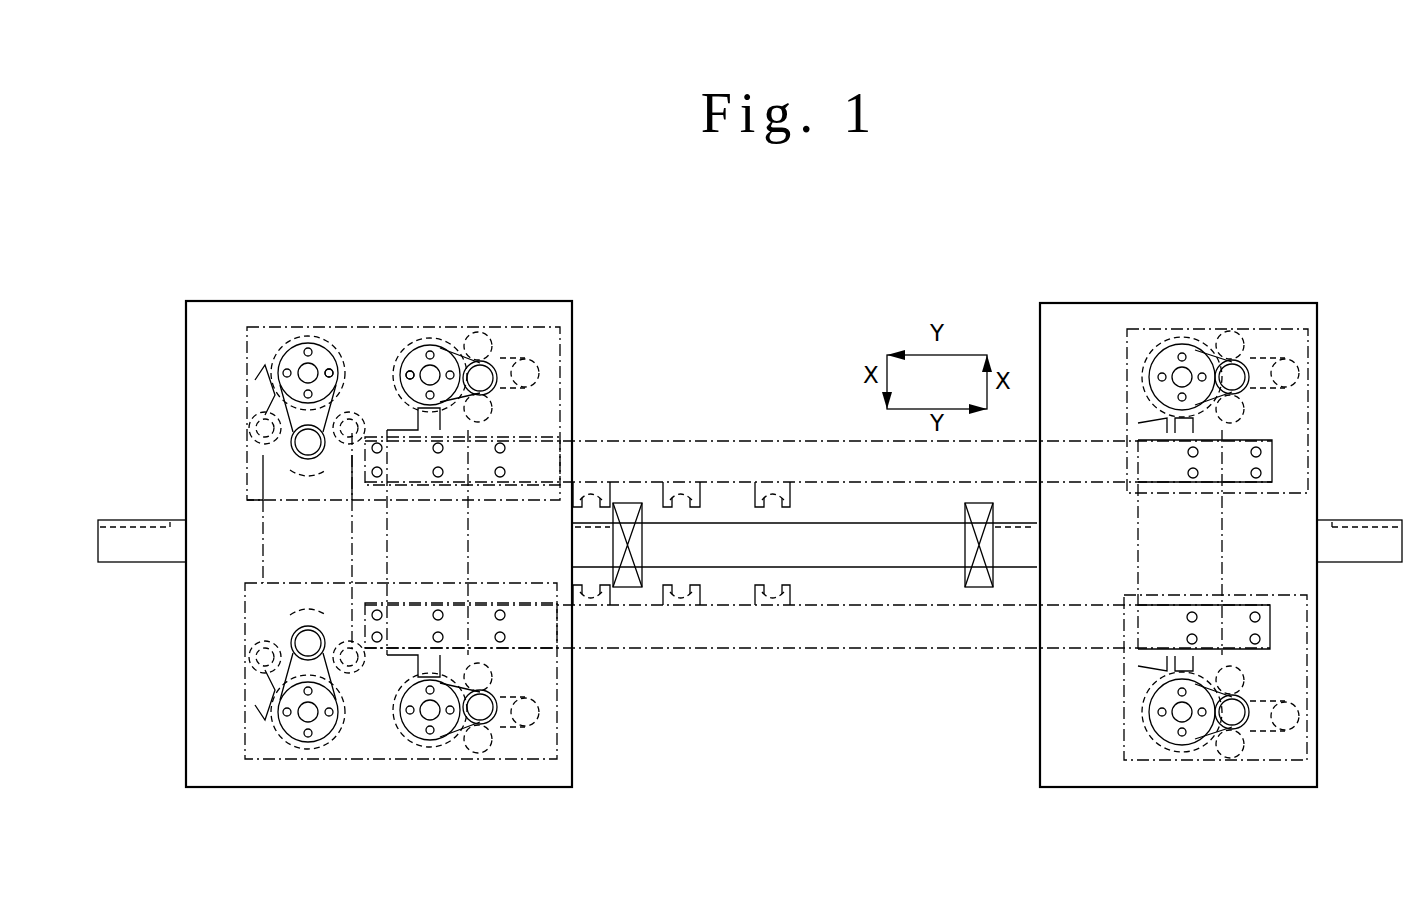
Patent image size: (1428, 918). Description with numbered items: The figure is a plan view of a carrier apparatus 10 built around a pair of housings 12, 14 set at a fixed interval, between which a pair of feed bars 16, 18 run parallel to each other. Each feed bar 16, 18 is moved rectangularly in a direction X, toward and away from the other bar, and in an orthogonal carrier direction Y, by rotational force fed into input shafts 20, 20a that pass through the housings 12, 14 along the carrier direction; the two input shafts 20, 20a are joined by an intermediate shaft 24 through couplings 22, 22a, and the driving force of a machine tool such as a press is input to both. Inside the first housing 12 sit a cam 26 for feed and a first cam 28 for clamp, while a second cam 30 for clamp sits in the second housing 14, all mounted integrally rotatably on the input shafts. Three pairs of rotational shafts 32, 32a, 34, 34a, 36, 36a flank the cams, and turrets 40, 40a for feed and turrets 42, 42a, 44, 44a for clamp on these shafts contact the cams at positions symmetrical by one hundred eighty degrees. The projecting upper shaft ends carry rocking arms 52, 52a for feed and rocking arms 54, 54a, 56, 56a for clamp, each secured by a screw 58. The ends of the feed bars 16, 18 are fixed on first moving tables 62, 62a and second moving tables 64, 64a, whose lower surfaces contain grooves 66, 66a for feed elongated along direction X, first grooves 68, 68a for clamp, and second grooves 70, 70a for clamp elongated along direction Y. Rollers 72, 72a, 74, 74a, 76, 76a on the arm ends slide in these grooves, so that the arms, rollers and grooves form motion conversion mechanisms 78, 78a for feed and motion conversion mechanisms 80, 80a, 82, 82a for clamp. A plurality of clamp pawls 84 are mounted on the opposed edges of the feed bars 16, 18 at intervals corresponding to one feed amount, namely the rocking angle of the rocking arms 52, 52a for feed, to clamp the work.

The carrier apparatus 10 is at (672, 322).
The first housing 12 is at (510, 787).
The second housing 14 is at (1042, 787).
The feed bar 16 is at (800, 441).
The feed bar 18 is at (778, 648).
The input shaft 20 is at (115, 562).
The input shaft 20a is at (1390, 562).
The coupling 22 is at (633, 587).
The coupling 22a is at (978, 587).
The intermediate shaft 24 is at (905, 567).
The cam for feed 26 is at (263, 495).
The first cam for clamp 28 is at (470, 535).
The second cam for clamp 30 is at (1138, 543).
The rotational shaft 32 is at (328, 360).
The rotational shaft 32a is at (318, 722).
The rotational shaft 34 is at (429, 345).
The rotational shaft 34a is at (432, 722).
The rotational shaft 36 is at (1186, 345).
The rotational shaft 36a is at (1176, 740).
The turret for feed 40 is at (287, 343).
The turret for feed 40a is at (270, 742).
The turret for clamp 42 is at (465, 332).
The turret for clamp 42a is at (420, 752).
The turret for clamp 44 is at (1160, 340).
The turret for clamp 44a is at (1140, 748).
The rocking arm for feed 52 is at (303, 343).
The rocking arm for feed 52a is at (298, 745).
The rocking arm for clamp 54 is at (397, 345).
The rocking arm for clamp 54a is at (396, 740).
The rocking arm for clamp 56 is at (1150, 360).
The rocking arm for clamp 56a is at (1152, 715).
The screw 58 is at (333, 370).
The first moving table 62 is at (247, 340).
The first moving table 62a is at (245, 740).
The second moving table 64 is at (1308, 425).
The second moving table 64a is at (1307, 672).
The groove for feed 66 is at (250, 462).
The groove for feed 66a is at (250, 622).
The first groove for clamp 68 is at (560, 340).
The first groove for clamp 68a is at (540, 740).
The second groove for clamp 70 is at (1300, 345).
The second groove for clamp 70a is at (1300, 720).
The roller 72 is at (300, 448).
The roller 72a is at (300, 635).
The roller 74 is at (496, 365).
The roller 74a is at (492, 725).
The roller 76 is at (1240, 360).
The roller 76a is at (1252, 725).
The motion conversion mechanism for feed 78 is at (240, 404).
The motion conversion mechanism for feed 78a is at (240, 680).
The motion conversion mechanism for clamp 80 is at (482, 318).
The motion conversion mechanism for clamp 80a is at (468, 775).
The motion conversion mechanism for clamp 82 is at (1230, 318).
The motion conversion mechanism for clamp 82a is at (1225, 775).
The clamp pawl 84 is at (592, 482).